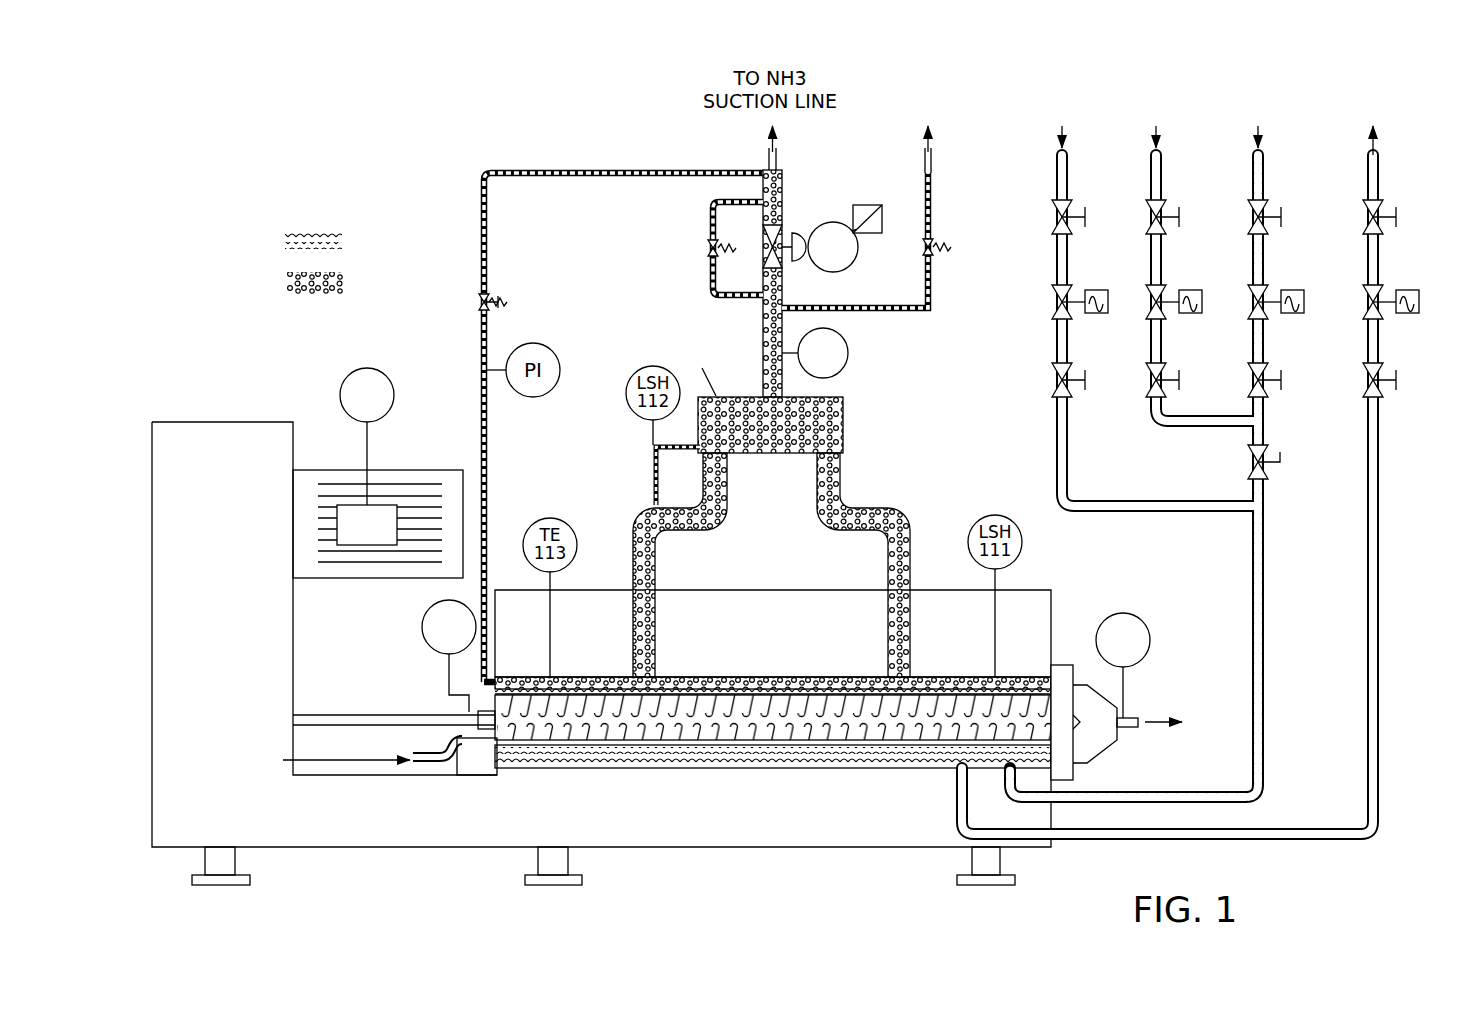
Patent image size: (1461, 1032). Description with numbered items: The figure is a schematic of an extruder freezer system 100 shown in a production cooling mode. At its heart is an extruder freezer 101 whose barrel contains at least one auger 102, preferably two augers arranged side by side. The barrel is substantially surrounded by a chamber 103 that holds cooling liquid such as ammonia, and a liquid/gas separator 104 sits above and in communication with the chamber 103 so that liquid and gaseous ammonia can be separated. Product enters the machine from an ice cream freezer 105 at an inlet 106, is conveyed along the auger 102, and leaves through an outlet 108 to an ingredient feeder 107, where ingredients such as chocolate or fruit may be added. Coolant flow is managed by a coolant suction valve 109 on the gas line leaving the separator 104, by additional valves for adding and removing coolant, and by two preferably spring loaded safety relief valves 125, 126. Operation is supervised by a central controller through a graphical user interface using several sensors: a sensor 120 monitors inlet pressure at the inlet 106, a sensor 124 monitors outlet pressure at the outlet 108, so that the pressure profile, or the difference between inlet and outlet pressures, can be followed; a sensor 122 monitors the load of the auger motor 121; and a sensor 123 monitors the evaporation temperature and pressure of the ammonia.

The extruder freezer system 100 is at (377, 186).
The extruder freezer 101 is at (840, 824).
The auger 102 is at (716, 722).
The chamber 103 is at (1028, 674).
The liquid/gas separator 104 is at (832, 425).
The ice cream freezer 105 is at (246, 798).
The inlet 106 is at (433, 770).
The ingredient feeder 107 is at (1203, 650).
The outlet 108 is at (1137, 712).
The coolant suction valve 109 is at (788, 262).
The sensor 120 is at (420, 627).
The auger motor 121 is at (330, 470).
The sensor 122 is at (359, 366).
The sensor 123 is at (851, 352).
The sensor 124 is at (1129, 610).
The safety relief valve 125 is at (706, 262).
The safety relief valve 126 is at (939, 238).